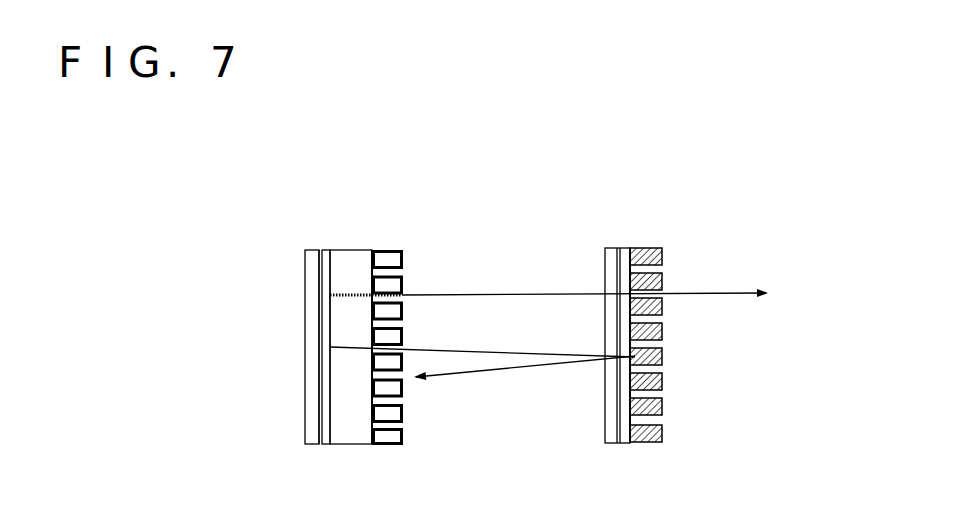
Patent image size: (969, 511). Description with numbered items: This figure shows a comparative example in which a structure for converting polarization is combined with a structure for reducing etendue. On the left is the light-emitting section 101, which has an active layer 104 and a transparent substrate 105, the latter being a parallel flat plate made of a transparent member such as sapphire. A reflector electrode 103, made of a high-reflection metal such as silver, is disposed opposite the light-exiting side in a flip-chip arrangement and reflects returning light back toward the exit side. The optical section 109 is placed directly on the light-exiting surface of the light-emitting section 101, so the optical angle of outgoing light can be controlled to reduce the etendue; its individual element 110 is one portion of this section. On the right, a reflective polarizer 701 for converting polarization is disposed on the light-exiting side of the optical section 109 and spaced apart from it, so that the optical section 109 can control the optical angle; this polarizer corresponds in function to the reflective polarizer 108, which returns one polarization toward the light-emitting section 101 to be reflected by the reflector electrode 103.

The light-emitting section 101 is at (363, 312).
The reflector electrode 103 is at (315, 249).
The active layer 104 is at (326, 249).
The transparent substrate 105 is at (367, 249).
The optical section 109 is at (402, 236).
The electrode 110 is at (388, 443).
The reflective polarizer 701 is at (624, 325).
The reflective polarizer 108 is at (606, 444).